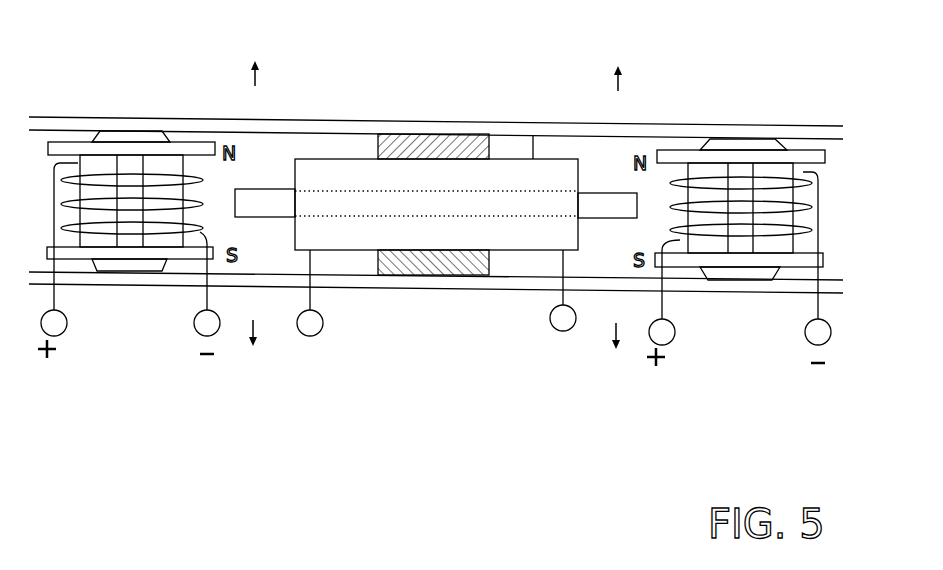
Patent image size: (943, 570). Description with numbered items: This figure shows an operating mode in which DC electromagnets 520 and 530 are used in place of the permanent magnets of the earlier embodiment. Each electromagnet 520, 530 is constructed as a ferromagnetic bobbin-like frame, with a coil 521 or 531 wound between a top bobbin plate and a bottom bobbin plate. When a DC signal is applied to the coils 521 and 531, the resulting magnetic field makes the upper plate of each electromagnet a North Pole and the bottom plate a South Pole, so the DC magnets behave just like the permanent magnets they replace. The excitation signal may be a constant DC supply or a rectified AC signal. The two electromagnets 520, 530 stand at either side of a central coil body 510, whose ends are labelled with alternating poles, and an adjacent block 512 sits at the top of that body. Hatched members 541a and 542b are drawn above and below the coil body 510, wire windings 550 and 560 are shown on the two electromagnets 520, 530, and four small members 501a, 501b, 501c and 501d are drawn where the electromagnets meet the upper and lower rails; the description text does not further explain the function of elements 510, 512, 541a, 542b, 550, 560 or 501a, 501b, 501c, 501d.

The moving coil body 510 is at (605, 193).
The coil body end block 512 is at (533, 136).
The DC electromagnet 520 is at (55, 145).
The coil 521 is at (107, 183).
The DC electromagnet 530 is at (785, 157).
The coil 531 is at (717, 187).
The first coil winding 550 is at (135, 233).
The second coil winding 560 is at (748, 240).
The upper damper member 541a is at (413, 138).
The lower damper member 542b is at (400, 275).
The fixing member 501a is at (150, 135).
The fixing member 501b is at (107, 265).
The fixing member 501c is at (717, 143).
The fixing member 501d is at (728, 277).